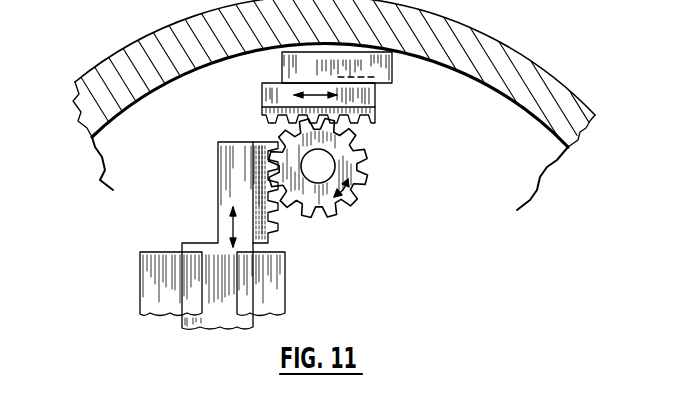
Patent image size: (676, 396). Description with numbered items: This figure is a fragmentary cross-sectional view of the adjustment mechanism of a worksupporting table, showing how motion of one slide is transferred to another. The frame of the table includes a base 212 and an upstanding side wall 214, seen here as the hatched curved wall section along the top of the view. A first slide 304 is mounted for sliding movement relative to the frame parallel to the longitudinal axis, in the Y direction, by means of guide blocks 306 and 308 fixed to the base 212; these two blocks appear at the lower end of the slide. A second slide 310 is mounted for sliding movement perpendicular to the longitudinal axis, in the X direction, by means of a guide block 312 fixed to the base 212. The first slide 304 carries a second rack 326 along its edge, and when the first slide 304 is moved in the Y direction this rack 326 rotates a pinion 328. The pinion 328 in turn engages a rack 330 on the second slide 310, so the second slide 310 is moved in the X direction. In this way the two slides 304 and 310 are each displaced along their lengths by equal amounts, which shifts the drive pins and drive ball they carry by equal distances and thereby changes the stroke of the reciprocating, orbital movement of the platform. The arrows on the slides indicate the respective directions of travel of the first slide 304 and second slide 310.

The base 212 is at (117, 158).
The upstanding side wall 214 is at (140, 55).
The first slide 304 is at (217, 262).
The guide block 306 is at (153, 285).
The guide block 308 is at (277, 278).
The second slide 310 is at (368, 97).
The guide block 312 is at (393, 67).
The second rack 326 is at (273, 224).
The pinion 328 is at (365, 158).
The rack 330 is at (370, 108).